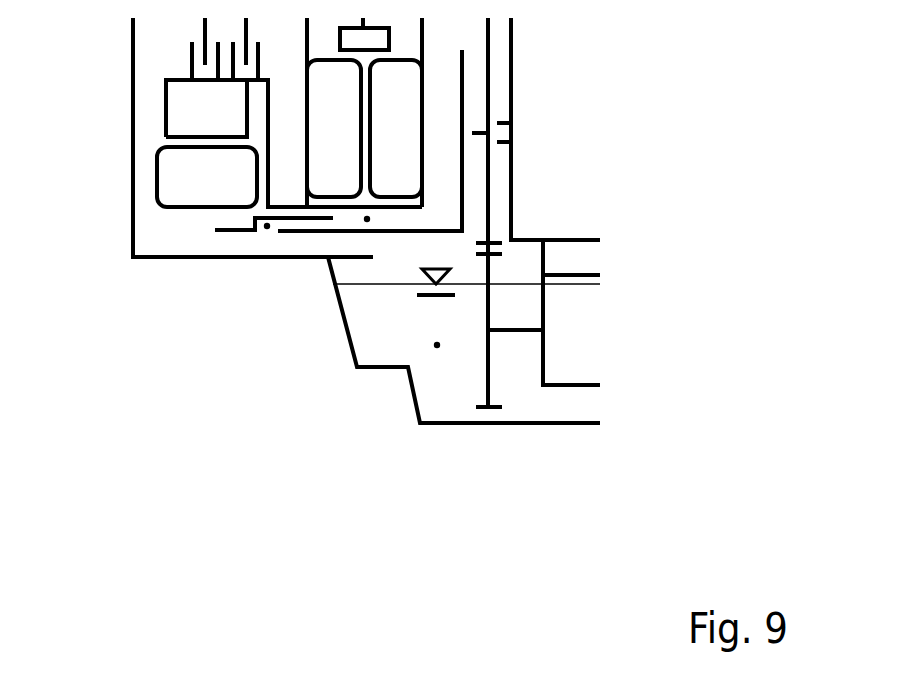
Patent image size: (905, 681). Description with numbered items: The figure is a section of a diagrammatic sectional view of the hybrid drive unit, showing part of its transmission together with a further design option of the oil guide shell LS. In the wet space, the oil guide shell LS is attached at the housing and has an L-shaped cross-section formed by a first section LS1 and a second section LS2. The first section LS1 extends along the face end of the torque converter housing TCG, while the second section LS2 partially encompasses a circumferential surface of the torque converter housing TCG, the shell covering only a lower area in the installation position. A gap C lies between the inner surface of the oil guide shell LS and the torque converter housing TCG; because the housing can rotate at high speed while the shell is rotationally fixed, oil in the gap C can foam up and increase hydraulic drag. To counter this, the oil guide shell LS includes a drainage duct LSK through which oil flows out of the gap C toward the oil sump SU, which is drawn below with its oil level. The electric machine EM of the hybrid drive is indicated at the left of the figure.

The electric motor EM is at (166, 225).
The torque converter housing TCG is at (423, 97).
The oil guide shell LS is at (238, 240).
The drainage duct LSK is at (267, 226).
The gap C is at (367, 219).
The oil sump SU is at (437, 345).
The first section LS1 is at (462, 167).
The second section LS2 is at (437, 231).